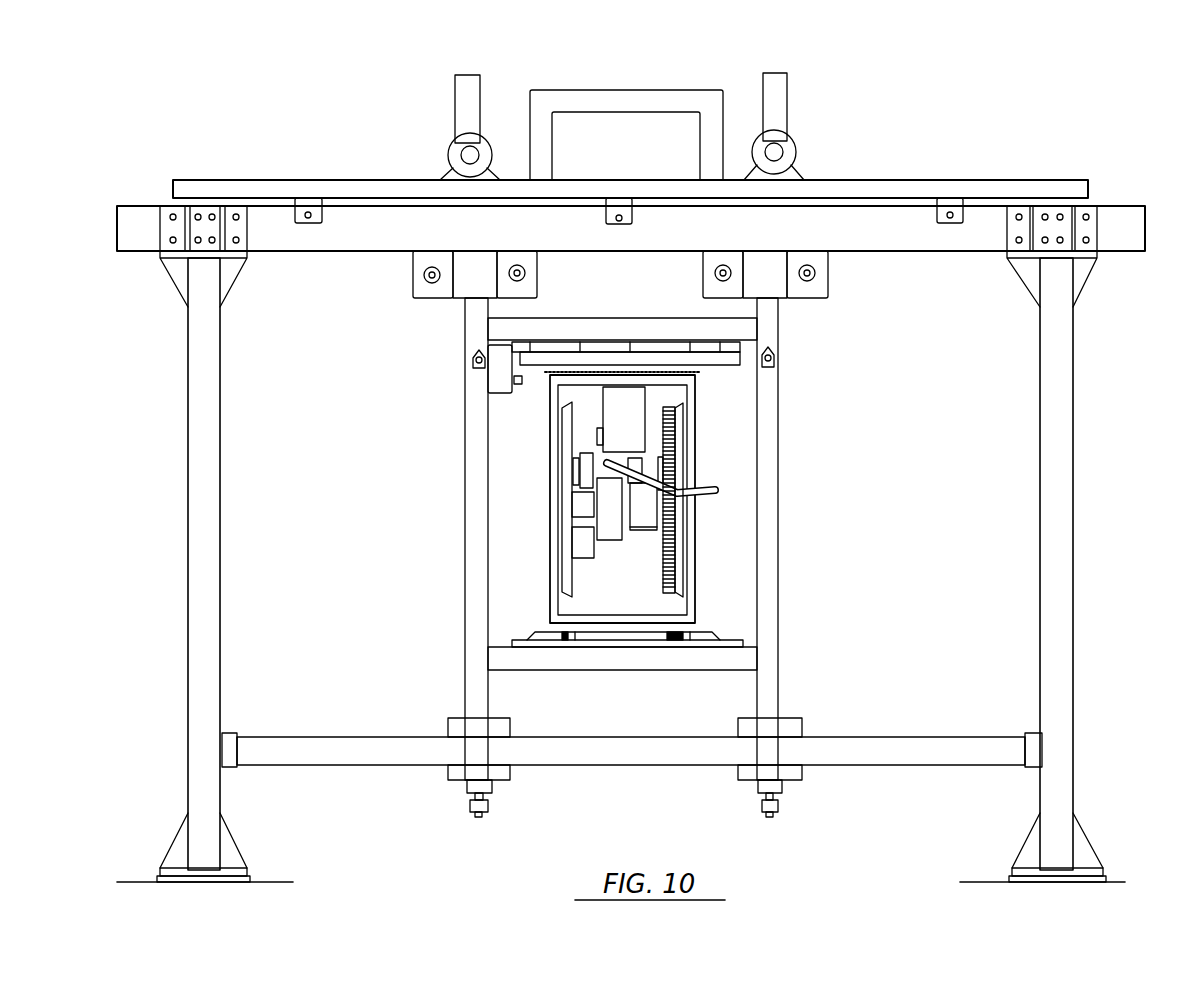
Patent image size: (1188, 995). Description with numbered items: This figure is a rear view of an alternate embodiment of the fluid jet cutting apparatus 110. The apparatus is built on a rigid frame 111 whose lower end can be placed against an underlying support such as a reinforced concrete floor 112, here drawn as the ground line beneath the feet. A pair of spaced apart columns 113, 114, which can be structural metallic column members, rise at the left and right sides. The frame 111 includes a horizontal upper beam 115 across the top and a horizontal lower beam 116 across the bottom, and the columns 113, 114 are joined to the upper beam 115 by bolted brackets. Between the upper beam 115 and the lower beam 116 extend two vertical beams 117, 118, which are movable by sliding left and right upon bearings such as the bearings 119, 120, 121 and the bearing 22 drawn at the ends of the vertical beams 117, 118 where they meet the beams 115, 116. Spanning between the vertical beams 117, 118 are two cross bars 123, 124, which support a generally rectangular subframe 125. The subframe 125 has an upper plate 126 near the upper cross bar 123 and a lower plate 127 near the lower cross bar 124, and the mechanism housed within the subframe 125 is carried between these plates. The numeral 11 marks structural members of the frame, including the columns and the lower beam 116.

The fluid jet cutting apparatus 110 is at (1027, 138).
The rigid frame 111 is at (275, 257).
The reinforced concrete floor 112 is at (277, 880).
The column 113 is at (200, 793).
The column 114 is at (1062, 790).
The horizontal upper beam 115 is at (442, 242).
The horizontal lower beam 116 is at (885, 743).
The vertical beam 117 is at (472, 493).
The vertical beam 118 is at (804, 539).
The bearing 119 is at (472, 287).
The bearing 120 is at (782, 292).
The bearing 121 is at (447, 720).
The clamp bracket 22 is at (800, 712).
The structural member 11 is at (222, 672).
The cross bar 123 is at (603, 330).
The cross bar 124 is at (626, 660).
The subframe 125 is at (555, 470).
The upper plate 126 is at (748, 350).
The lower plate 127 is at (520, 640).